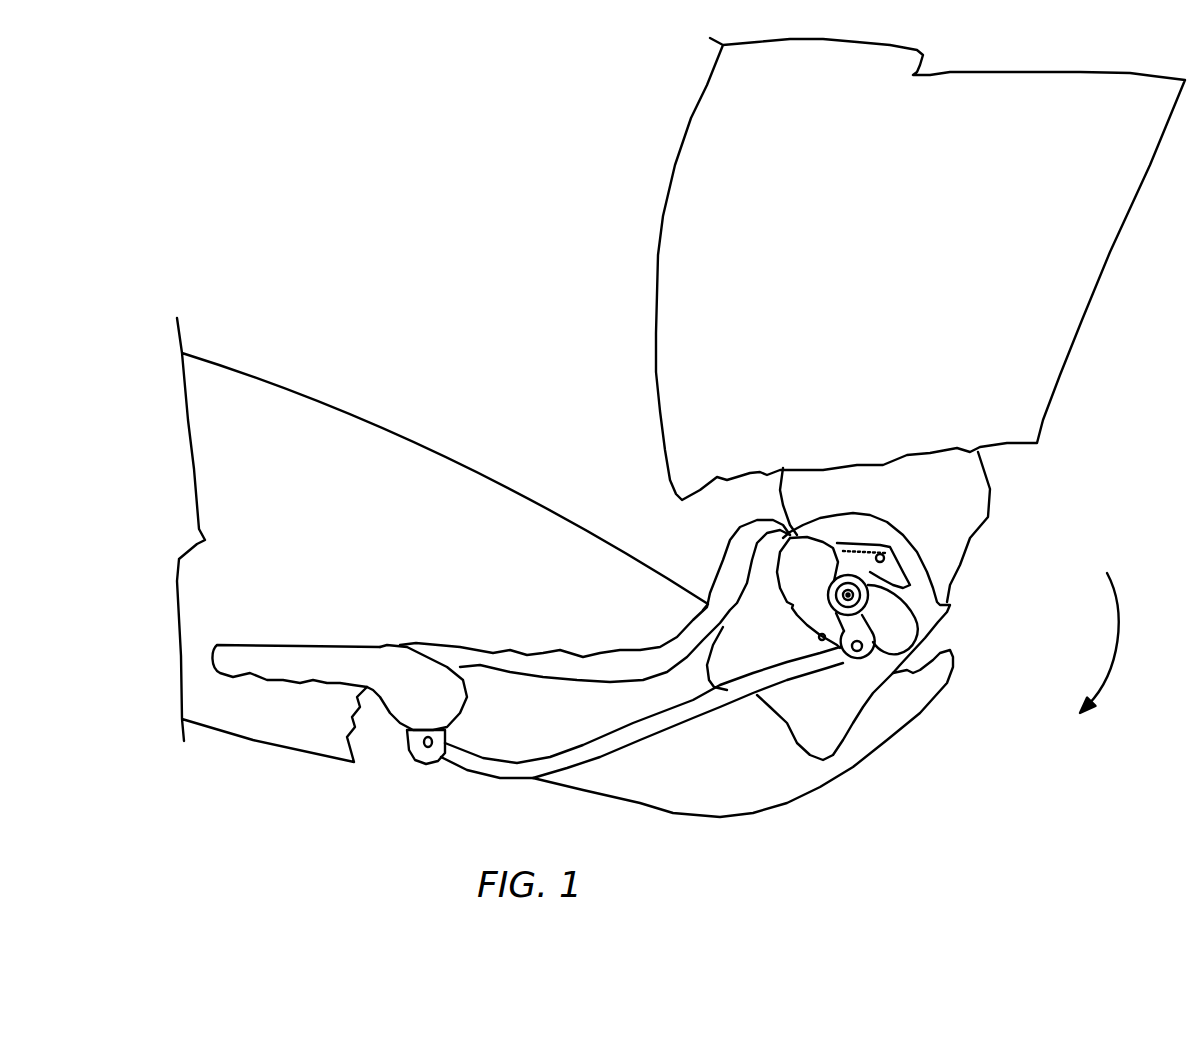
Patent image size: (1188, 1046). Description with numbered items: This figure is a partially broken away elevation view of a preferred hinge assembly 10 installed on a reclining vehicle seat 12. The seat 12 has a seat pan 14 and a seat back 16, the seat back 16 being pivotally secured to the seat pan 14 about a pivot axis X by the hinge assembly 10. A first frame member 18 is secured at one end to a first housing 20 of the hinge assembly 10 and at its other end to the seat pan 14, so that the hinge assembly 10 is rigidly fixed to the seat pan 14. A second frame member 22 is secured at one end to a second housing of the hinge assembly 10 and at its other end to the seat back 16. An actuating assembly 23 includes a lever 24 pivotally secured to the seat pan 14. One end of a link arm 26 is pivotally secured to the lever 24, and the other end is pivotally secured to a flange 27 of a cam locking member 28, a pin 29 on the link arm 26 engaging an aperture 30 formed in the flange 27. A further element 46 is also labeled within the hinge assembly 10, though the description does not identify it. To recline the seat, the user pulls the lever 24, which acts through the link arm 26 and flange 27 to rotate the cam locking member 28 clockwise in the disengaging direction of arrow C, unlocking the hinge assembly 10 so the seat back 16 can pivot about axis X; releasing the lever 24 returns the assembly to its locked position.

The hinge assembly 10 is at (922, 628).
The reclining vehicle seat 12 is at (555, 508).
The seat pan 14 is at (366, 535).
The seat back 16 is at (921, 222).
The first frame member 18 is at (689, 768).
The first housing 20 is at (776, 652).
The second frame member 22 is at (949, 512).
The actuating assembly 23 is at (407, 758).
The lever 24 is at (313, 663).
The link arm 26 is at (617, 737).
The flange 27 is at (867, 642).
The cam locking member 28 is at (865, 590).
The pin 29 is at (853, 667).
The aperture 30 is at (864, 657).
The pawl 46 is at (797, 557).
The pivot axis X is at (873, 596).
The arrow C is at (1121, 643).